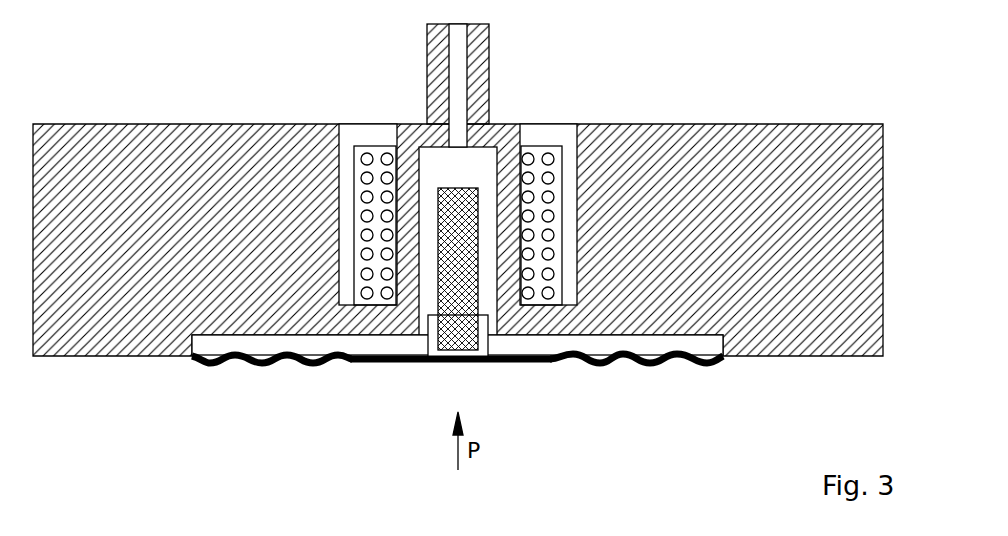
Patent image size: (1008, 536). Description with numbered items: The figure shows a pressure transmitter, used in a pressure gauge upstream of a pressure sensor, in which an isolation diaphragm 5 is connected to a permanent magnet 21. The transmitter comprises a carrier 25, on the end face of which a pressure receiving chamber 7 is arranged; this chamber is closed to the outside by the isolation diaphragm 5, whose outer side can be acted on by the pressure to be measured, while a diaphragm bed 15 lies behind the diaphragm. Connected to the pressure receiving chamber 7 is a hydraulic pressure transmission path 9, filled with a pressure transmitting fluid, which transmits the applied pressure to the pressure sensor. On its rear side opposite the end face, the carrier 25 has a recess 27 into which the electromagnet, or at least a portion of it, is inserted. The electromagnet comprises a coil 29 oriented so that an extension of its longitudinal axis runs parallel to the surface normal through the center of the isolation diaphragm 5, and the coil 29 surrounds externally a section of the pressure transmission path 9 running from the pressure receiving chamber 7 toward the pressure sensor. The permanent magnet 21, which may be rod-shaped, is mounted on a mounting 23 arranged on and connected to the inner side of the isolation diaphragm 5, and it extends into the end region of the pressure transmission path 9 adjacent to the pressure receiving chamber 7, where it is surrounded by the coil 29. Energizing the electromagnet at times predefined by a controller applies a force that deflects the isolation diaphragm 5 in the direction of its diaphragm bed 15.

The hydraulic pressure transmission path 9 is at (458, 70).
The coil 29 is at (557, 170).
The recess 27 is at (575, 207).
The carrier 25 is at (767, 147).
The permanent magnet 21 is at (447, 272).
The mounting 23 is at (432, 345).
The isolation diaphragm 5 is at (513, 365).
The pressure receiving chamber 7 is at (583, 348).
The diaphragm bed 15 is at (623, 335).